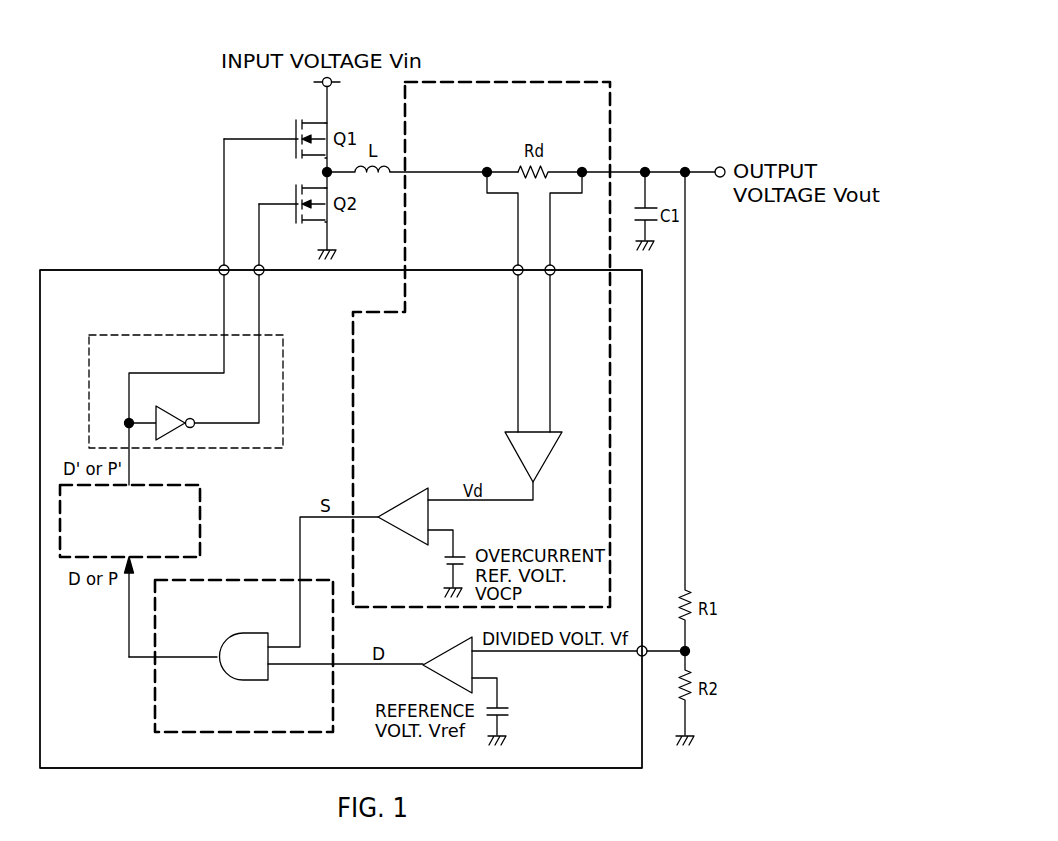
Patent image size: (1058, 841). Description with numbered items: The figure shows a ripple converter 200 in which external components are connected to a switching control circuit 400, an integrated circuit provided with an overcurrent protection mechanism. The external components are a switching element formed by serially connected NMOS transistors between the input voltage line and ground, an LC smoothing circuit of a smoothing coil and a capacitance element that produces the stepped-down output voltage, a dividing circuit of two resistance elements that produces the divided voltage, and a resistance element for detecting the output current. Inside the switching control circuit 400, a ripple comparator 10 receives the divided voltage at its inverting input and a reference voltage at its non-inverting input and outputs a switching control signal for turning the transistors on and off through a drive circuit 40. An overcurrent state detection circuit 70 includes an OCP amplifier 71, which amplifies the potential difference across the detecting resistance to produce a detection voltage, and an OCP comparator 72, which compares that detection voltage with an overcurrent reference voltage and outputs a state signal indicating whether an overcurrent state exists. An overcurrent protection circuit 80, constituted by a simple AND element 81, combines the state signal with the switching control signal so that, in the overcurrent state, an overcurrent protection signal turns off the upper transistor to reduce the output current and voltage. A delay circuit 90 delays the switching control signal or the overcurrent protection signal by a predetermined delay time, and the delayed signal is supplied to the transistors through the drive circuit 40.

The ripple converter 200 is at (700, 110).
The switching control circuit 400 is at (132, 270).
The drive circuit 40 is at (283, 347).
The delay circuit 90 is at (200, 507).
The overcurrent protection circuit 80 is at (240, 580).
The AND element 81 is at (242, 633).
The overcurrent state detection circuit 70 is at (611, 110).
The OCP amplifier 71 is at (548, 460).
The OCP comparator 72 is at (394, 502).
The ripple comparator 10 is at (440, 682).